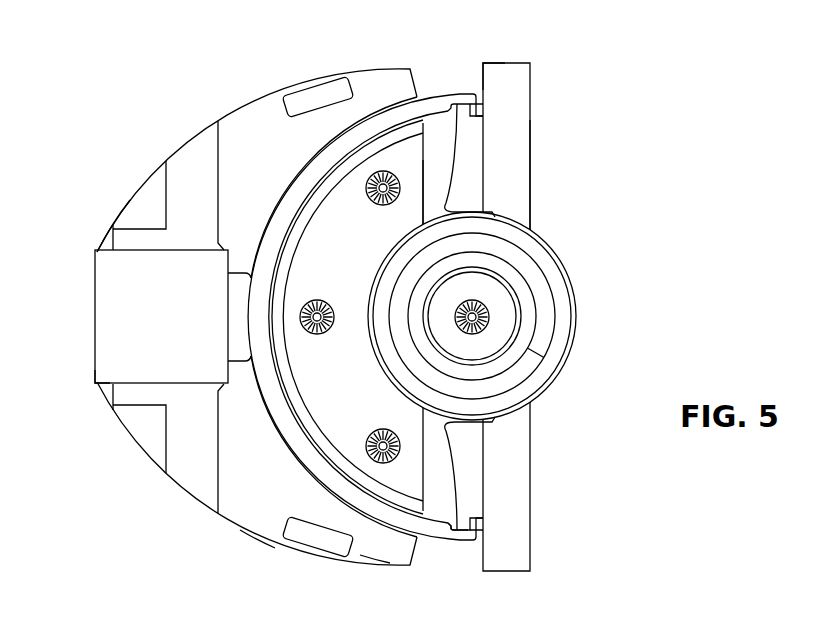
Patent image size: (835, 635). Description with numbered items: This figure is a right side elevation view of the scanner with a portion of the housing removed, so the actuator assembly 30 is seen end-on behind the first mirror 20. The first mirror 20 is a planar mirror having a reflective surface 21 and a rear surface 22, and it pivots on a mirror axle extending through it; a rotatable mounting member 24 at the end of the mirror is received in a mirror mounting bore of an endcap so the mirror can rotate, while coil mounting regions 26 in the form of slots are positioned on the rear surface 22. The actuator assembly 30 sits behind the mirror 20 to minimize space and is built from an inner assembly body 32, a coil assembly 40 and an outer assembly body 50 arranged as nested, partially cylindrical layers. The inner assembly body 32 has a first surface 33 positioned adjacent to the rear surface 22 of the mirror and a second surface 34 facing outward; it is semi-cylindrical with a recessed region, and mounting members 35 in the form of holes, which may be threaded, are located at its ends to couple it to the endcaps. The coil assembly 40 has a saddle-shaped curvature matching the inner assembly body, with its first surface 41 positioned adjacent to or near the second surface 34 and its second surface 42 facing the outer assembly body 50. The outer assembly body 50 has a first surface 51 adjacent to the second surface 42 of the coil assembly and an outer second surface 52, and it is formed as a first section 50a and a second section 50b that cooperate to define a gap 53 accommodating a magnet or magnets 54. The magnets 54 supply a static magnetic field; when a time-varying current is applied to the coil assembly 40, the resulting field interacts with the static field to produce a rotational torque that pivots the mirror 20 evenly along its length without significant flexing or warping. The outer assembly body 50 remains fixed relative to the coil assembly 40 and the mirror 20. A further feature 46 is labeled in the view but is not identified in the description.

The first mirror 20 is at (515, 72).
The reflective surface 21 is at (530, 163).
The rear surface 22 is at (483, 68).
The rotatable mounting members 24 is at (577, 320).
The coil mounting regions 26 is at (483, 117).
The actuator assembly 30 is at (75, 167).
The inner assembly body 32 is at (321, 257).
The first surface 33 is at (419, 186).
The second surface 34 is at (356, 147).
The mounting members 35 is at (367, 186).
The coil assembly 40 is at (378, 128).
The first surface 41 is at (441, 510).
The second surface 42 is at (456, 560).
The hook foot 46 is at (483, 105).
The outer assembly body 50 is at (240, 108).
The first section 50a is at (241, 172).
The second section 50b is at (243, 489).
The first surface 51 is at (371, 545).
The second surface 52 is at (255, 545).
The gap 53 is at (92, 390).
The magnet or magnets 54 is at (136, 329).